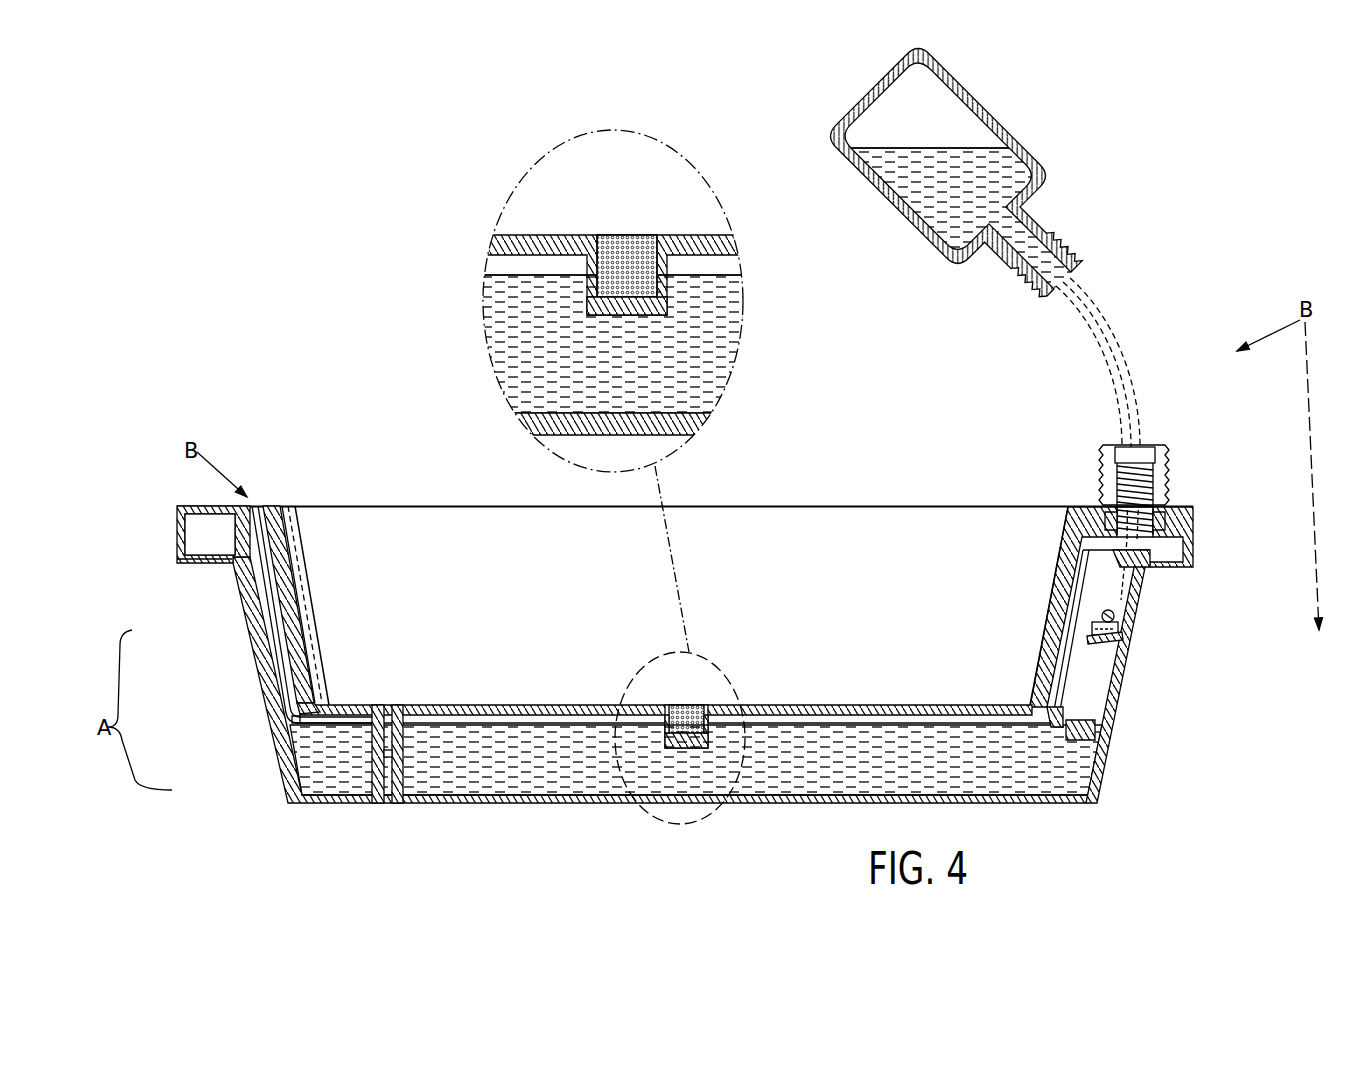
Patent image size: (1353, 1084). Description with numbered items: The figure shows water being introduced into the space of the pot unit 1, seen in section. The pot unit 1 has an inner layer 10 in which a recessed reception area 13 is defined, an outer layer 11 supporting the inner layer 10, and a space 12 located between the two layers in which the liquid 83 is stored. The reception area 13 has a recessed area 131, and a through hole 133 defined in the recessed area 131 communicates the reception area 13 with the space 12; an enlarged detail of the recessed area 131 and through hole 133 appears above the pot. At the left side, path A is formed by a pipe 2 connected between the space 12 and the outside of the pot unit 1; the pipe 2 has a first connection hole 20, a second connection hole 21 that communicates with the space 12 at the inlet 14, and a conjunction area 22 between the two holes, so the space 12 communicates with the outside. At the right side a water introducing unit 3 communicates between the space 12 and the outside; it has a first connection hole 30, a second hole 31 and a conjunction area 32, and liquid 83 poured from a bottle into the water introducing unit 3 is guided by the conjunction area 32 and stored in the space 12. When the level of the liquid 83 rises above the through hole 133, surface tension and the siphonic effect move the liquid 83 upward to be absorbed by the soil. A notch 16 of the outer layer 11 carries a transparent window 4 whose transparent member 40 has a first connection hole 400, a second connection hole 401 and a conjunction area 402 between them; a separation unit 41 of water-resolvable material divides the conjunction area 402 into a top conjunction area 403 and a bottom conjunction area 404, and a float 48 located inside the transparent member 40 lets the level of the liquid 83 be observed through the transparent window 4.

The pot unit 1 is at (393, 492).
The pipe 2 is at (170, 597).
The water introducing unit 3 is at (1179, 440).
The transparent window 4 is at (1118, 739).
The inner layer 10 is at (210, 511).
The outer layer 11 is at (198, 560).
The space 12 is at (197, 531).
The reception area 13 is at (457, 530).
The inlet 14 is at (307, 712).
The notch 16 is at (1105, 732).
The first connection hole 20 is at (240, 560).
The second connection hole 21 is at (313, 697).
The conjunction area 22 is at (287, 623).
The first connection hole 30 is at (1148, 443).
The second hole 31 is at (1165, 485).
The conjunction area 32 is at (1168, 506).
The transparent member 40 is at (1275, 567).
The separation unit 41 is at (1100, 647).
The float 48 is at (1108, 613).
The liquid 83 is at (323, 777).
The recessed area 131 is at (667, 280).
The through hole 133 is at (597, 308).
The first connection hole 400 is at (1130, 571).
The second connection hole 401 is at (1090, 708).
The conjunction area 402 is at (1228, 603).
The top conjunction area 403 is at (1122, 582).
The bottom conjunction area 404 is at (1100, 677).